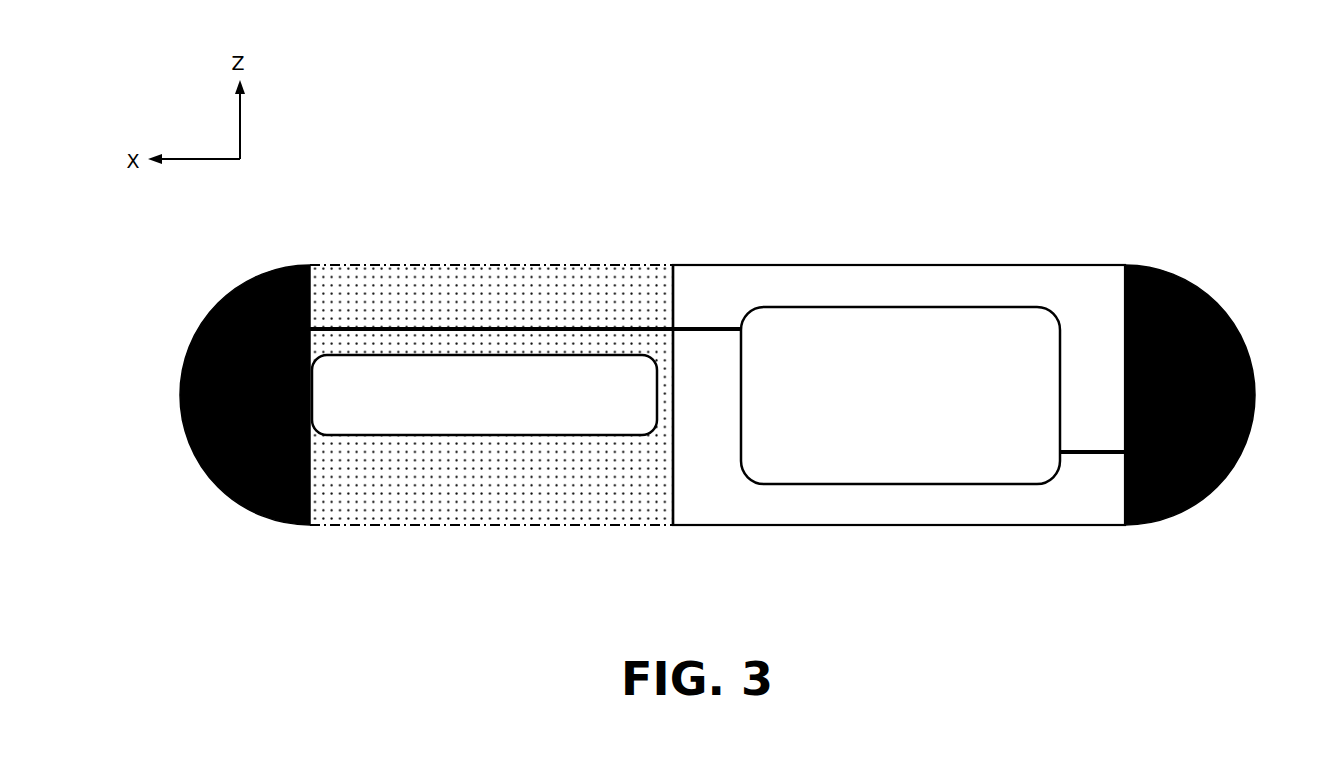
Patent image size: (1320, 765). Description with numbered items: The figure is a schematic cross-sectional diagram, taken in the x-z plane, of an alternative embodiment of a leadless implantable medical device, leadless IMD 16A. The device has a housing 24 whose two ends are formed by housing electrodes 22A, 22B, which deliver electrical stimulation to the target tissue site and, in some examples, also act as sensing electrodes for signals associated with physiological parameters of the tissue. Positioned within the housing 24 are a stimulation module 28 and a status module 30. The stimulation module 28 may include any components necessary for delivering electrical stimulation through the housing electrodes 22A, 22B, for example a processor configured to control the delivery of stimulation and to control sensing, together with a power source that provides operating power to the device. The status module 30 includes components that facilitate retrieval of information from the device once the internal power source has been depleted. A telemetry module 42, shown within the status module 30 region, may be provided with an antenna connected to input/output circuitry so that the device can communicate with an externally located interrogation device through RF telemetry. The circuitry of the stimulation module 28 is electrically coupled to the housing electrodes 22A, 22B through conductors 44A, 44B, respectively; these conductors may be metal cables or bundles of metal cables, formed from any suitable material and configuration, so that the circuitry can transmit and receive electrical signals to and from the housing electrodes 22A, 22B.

The leadless IMD 16A is at (716, 364).
The housing electrode 22A is at (213, 360).
The housing electrode 22B is at (1220, 358).
The housing 24 is at (721, 256).
The stimulation module 28 is at (900, 395).
The status module 30 is at (533, 508).
The telemetry module 42 is at (484, 395).
The conductor 44A is at (640, 325).
The conductor 44B is at (1084, 450).